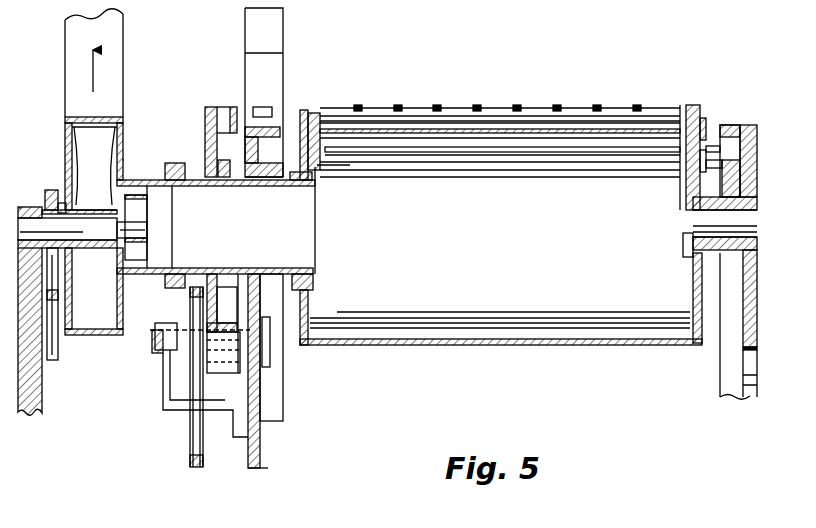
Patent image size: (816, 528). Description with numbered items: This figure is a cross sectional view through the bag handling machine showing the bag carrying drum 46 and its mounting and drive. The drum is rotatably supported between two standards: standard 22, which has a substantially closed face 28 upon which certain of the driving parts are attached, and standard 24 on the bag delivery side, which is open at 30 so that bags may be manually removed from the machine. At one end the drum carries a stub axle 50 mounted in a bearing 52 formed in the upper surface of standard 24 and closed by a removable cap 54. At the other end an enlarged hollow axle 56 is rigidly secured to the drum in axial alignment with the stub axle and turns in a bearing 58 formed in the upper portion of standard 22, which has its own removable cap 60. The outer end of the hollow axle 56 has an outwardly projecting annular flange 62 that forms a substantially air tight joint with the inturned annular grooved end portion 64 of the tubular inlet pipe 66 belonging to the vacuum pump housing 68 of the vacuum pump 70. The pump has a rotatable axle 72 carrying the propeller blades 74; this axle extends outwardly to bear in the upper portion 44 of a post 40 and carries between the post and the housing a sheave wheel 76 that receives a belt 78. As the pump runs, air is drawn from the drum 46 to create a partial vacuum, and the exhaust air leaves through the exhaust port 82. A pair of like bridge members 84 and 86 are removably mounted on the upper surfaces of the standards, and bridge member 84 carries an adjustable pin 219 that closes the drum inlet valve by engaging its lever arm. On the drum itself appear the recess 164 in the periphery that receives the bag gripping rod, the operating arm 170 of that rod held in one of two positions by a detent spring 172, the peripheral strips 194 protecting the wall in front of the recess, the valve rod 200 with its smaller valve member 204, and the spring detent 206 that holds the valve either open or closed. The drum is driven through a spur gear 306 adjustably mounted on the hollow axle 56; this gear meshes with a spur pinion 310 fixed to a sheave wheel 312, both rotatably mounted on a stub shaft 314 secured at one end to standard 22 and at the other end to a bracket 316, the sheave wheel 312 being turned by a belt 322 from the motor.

The standard 22 is at (278, 403).
The standard 24 is at (720, 370).
The closed face 28 is at (253, 474).
The opening 30 is at (757, 380).
The post 40 is at (30, 397).
The upper portion 44 is at (20, 207).
The bag carrying drum 46 is at (428, 347).
The stub axle 50 is at (745, 221).
The bearing 52 is at (757, 250).
The removable cap 54 is at (753, 203).
The hollow axle 56 is at (315, 270).
The bearing 58 is at (290, 268).
The removable cap 60 is at (258, 186).
The annular flange 62 is at (178, 186).
The inturned annular grooved end portion 64 is at (175, 163).
The tubular inlet pipe 66 is at (140, 274).
The vacuum pump housing 68 is at (66, 133).
The vacuum pump 70 is at (142, 147).
The rotatable axle 72 is at (35, 225).
The propeller blades 74 is at (94, 220).
The sheave wheel 76 is at (52, 189).
The belt 78 is at (55, 360).
The exhaust port 82 is at (117, 43).
The bridge member 84 is at (755, 140).
The bridge member 86 is at (272, 127).
The recess 164 is at (617, 112).
The operating arm 170 is at (703, 120).
The detent spring 172 is at (712, 149).
The peripheral strips 194 is at (436, 106).
The valve rod 200 is at (622, 152).
The valve member 204 is at (565, 172).
The spring detent 206 is at (692, 175).
The adjustable pin 219 is at (728, 165).
The spur gear 306 is at (213, 108).
The spur pinion 310 is at (238, 373).
The sheave wheel 312 is at (167, 407).
The stub shaft 314 is at (157, 348).
The bracket 316 is at (170, 394).
The belt 322 is at (190, 460).